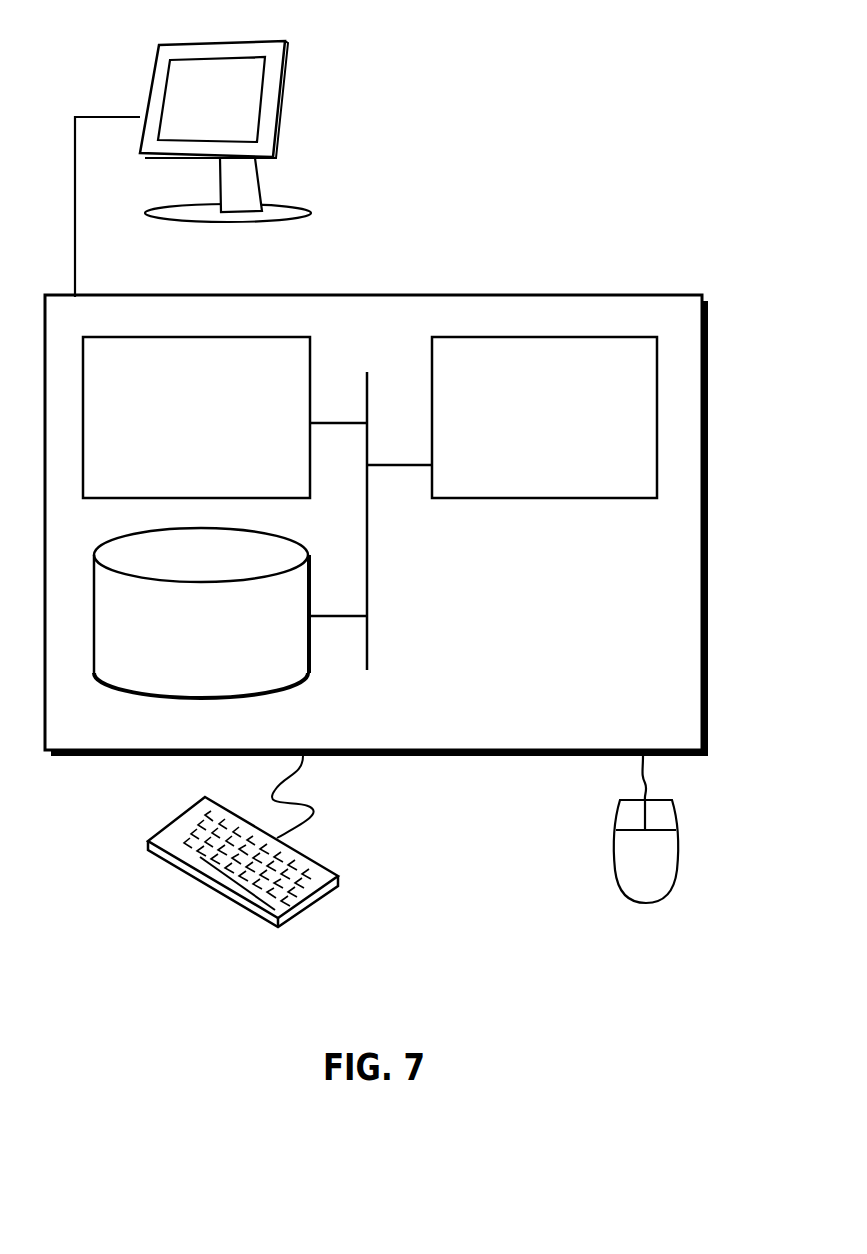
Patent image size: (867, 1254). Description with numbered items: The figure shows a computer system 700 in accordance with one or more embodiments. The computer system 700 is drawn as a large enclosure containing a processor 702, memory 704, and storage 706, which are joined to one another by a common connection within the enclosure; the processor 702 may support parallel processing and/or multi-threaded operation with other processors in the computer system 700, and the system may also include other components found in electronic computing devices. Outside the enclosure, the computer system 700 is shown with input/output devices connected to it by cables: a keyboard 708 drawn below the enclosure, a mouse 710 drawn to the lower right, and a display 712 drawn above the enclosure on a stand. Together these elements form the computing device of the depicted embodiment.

The computer system 700 is at (420, 275).
The processor 702 is at (567, 429).
The memory 704 is at (218, 429).
The storage 706 is at (225, 642).
The keyboard 708 is at (167, 862).
The mouse 710 is at (664, 871).
The display 712 is at (193, 169).